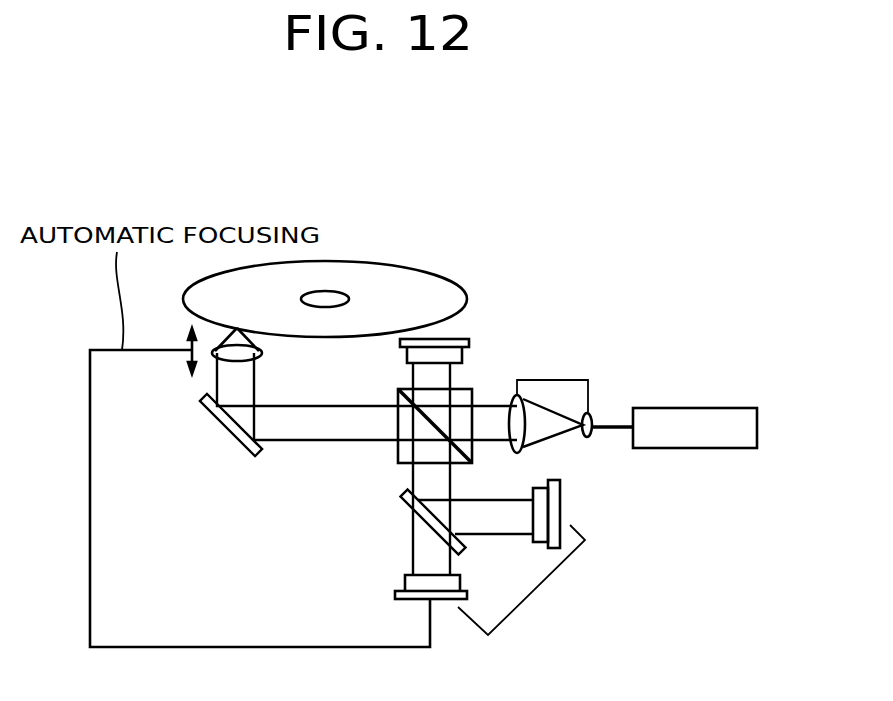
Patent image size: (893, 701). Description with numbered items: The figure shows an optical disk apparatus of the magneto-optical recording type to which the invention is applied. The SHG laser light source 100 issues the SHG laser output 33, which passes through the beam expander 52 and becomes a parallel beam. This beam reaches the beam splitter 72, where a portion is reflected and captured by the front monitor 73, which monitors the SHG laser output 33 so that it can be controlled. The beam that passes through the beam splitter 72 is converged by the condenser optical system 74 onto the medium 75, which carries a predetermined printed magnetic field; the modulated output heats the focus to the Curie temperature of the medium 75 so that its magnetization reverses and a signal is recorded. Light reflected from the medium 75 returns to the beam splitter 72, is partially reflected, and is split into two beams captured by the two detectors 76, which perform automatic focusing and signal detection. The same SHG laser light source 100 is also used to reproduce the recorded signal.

The medium 75 is at (408, 285).
The condenser optical system 74 is at (212, 354).
The front monitor 73 is at (465, 338).
The beam splitter 72 is at (462, 395).
The beam expander 52 is at (550, 380).
The SHG laser output 33 is at (600, 425).
The SHG laser light source 100 is at (713, 410).
The detectors 76 is at (535, 592).